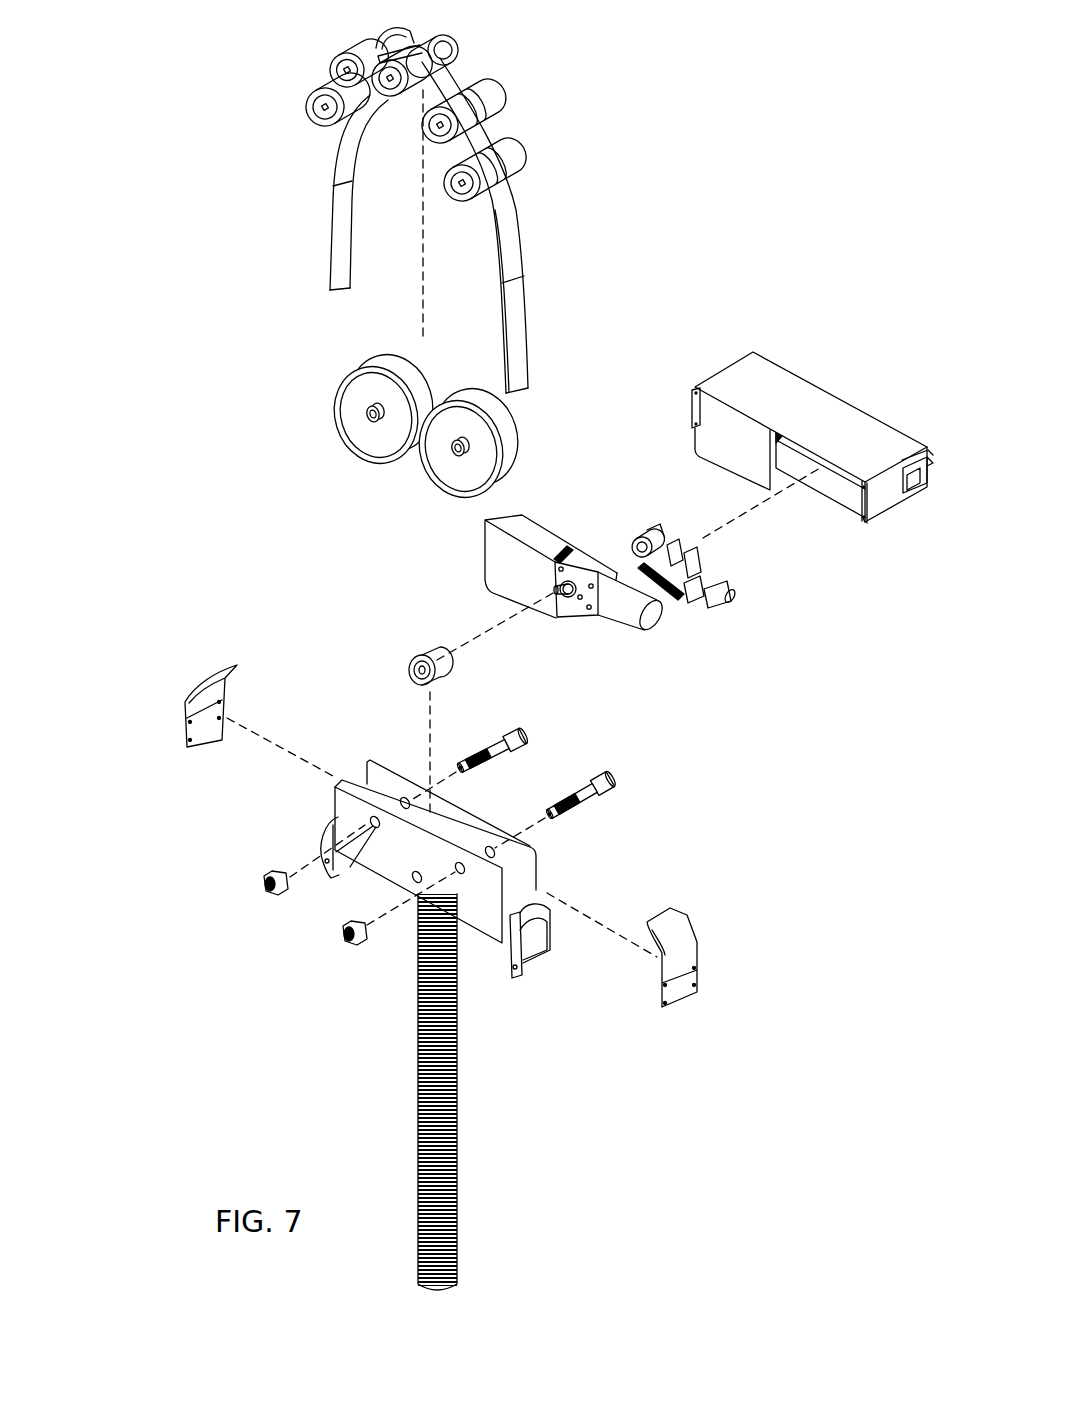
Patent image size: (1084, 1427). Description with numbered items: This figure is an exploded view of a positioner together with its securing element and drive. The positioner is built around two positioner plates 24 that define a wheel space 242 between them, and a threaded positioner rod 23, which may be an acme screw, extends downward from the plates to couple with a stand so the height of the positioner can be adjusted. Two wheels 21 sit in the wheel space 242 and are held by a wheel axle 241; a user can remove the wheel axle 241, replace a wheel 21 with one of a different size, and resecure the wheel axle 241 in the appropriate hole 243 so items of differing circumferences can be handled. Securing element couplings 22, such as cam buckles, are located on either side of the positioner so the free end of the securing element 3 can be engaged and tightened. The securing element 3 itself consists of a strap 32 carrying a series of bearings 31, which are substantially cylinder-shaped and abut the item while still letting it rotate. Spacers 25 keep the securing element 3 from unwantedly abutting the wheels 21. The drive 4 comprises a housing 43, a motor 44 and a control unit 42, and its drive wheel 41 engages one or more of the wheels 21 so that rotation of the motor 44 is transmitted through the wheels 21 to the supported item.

The securing element 3 is at (308, 47).
The bearings 31 is at (500, 86).
The strap 32 is at (328, 177).
The wheels 21 is at (365, 392).
The drive 4 is at (778, 300).
The drive wheel 41 is at (410, 658).
The control unit 42 is at (660, 578).
The housing 43 is at (780, 388).
The motor 44 is at (610, 618).
The securing element coupling 22 is at (325, 845).
The positioner rod 23 is at (460, 1091).
The positioner plates 24 is at (478, 878).
The wheel axle 241 is at (593, 795).
The wheel space 242 is at (378, 788).
The hole 243 is at (373, 826).
The spacer 25 is at (185, 702).